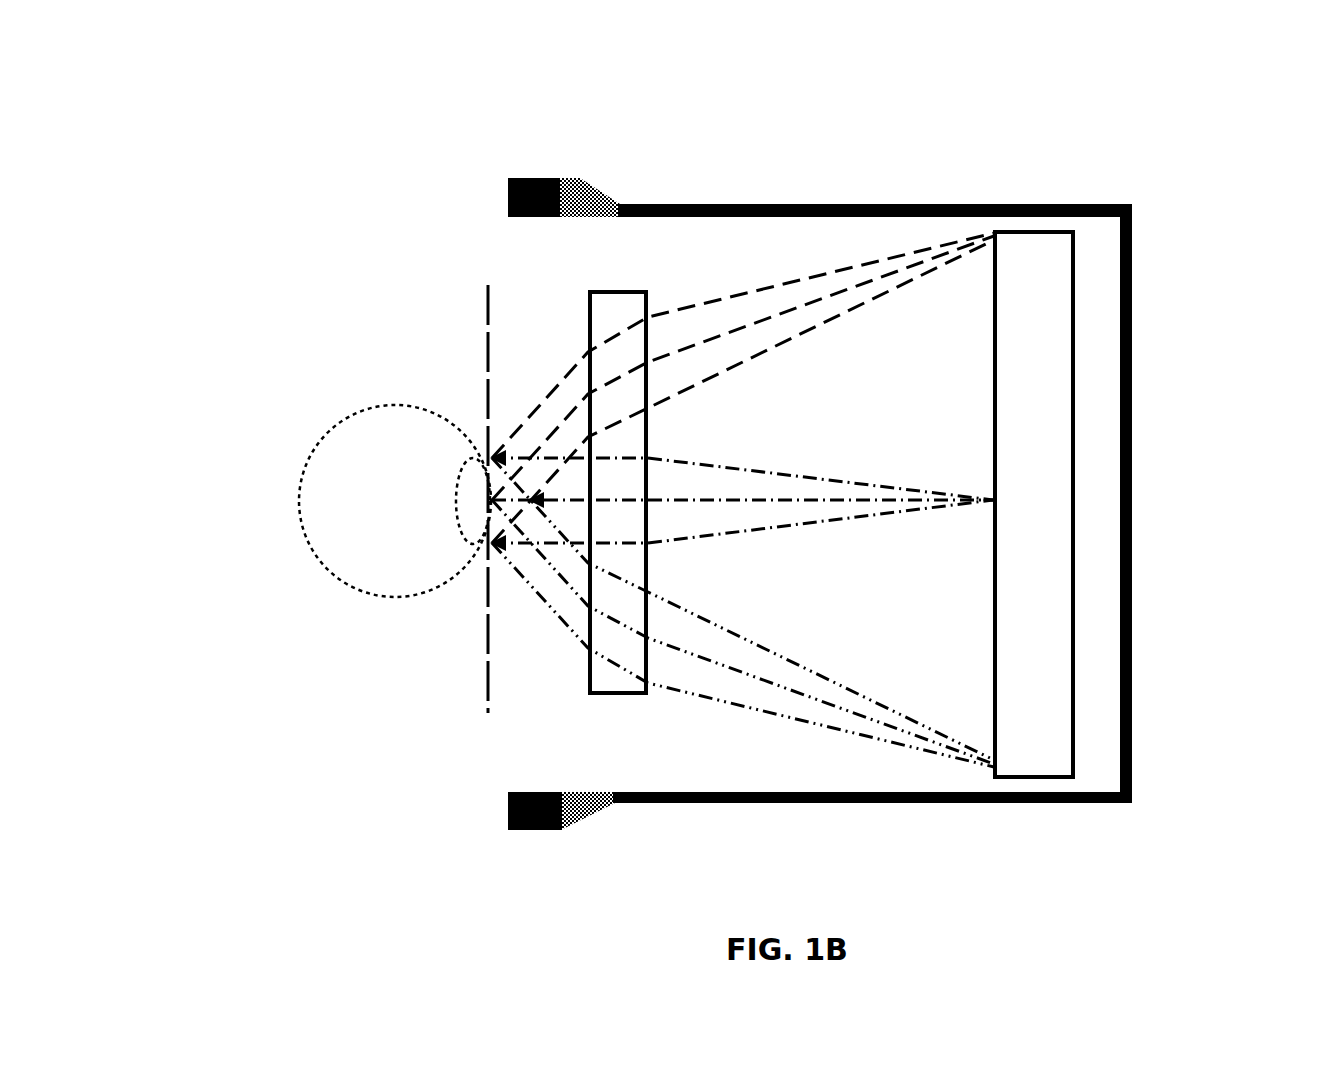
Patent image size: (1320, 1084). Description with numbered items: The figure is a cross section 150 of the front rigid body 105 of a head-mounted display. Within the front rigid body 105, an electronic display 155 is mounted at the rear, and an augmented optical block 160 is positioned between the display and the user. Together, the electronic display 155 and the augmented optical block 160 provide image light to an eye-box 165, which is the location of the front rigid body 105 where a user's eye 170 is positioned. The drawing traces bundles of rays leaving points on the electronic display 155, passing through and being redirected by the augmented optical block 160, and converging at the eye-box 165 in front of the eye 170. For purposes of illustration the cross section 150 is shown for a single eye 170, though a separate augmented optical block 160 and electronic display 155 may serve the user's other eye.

The cross section 150 is at (90, 63).
The front rigid body 105 is at (1040, 203).
The electronic display 155 is at (1073, 268).
The augmented optical block 160 is at (618, 288).
The eye-box 165 is at (488, 643).
The eye 170 is at (395, 502).